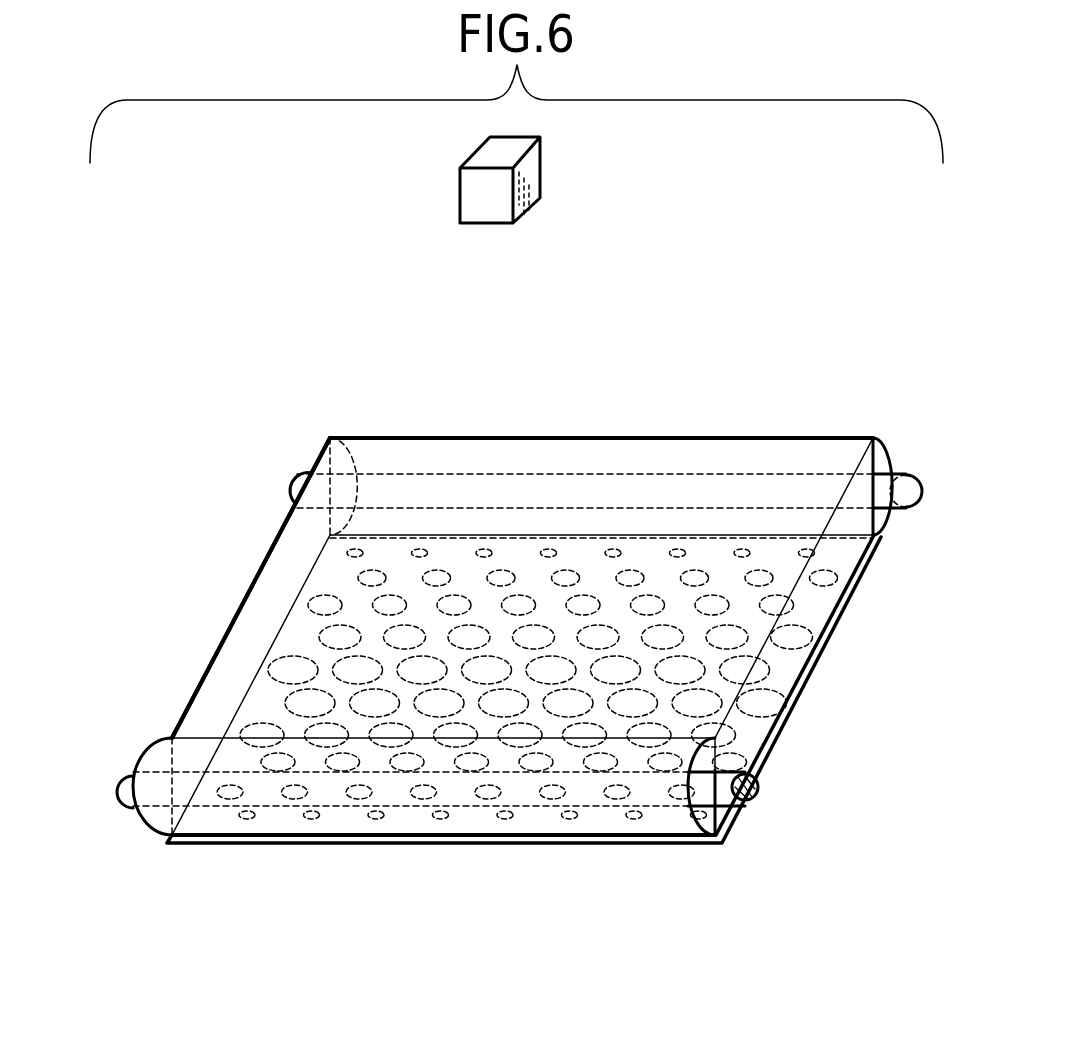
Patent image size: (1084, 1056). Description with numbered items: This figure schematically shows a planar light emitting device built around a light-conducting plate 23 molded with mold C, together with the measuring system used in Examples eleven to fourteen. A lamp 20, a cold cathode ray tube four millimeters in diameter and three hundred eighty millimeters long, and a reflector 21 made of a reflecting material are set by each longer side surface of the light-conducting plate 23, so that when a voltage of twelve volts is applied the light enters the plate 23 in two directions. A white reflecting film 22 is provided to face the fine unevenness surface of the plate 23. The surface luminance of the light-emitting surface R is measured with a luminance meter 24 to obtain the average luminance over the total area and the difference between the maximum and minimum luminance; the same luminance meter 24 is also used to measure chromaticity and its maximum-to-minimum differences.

The lamp 20 is at (907, 497).
The reflector 21 is at (888, 450).
The white reflecting film 22 is at (707, 843).
The light-conducting plate 23 is at (208, 703).
The luminance meter 24 is at (533, 177).
The light-emitting surface R is at (255, 615).